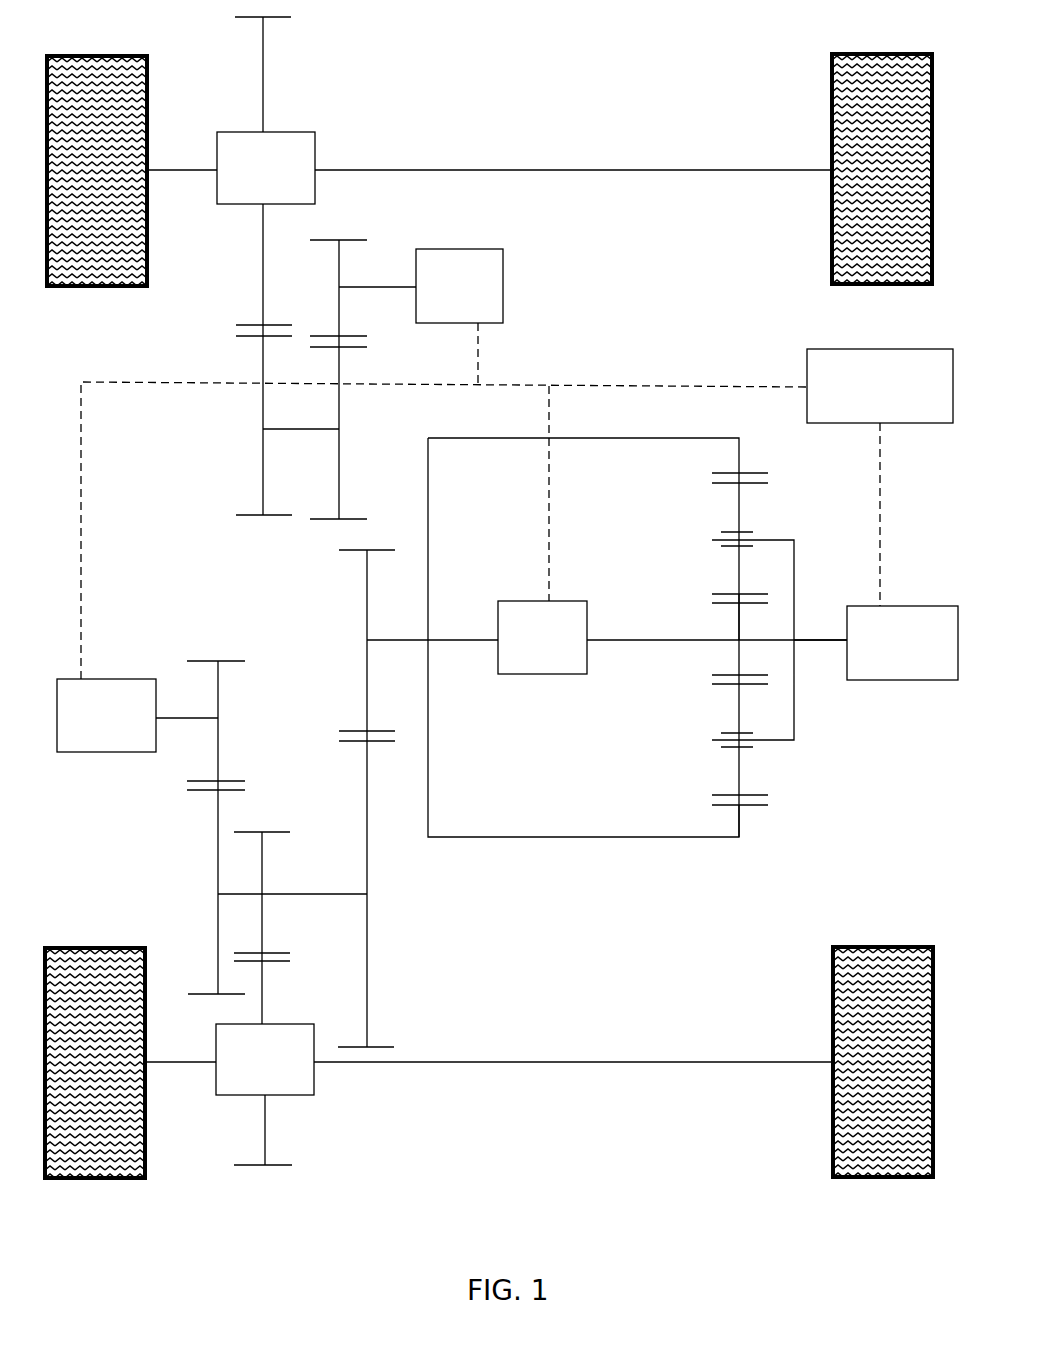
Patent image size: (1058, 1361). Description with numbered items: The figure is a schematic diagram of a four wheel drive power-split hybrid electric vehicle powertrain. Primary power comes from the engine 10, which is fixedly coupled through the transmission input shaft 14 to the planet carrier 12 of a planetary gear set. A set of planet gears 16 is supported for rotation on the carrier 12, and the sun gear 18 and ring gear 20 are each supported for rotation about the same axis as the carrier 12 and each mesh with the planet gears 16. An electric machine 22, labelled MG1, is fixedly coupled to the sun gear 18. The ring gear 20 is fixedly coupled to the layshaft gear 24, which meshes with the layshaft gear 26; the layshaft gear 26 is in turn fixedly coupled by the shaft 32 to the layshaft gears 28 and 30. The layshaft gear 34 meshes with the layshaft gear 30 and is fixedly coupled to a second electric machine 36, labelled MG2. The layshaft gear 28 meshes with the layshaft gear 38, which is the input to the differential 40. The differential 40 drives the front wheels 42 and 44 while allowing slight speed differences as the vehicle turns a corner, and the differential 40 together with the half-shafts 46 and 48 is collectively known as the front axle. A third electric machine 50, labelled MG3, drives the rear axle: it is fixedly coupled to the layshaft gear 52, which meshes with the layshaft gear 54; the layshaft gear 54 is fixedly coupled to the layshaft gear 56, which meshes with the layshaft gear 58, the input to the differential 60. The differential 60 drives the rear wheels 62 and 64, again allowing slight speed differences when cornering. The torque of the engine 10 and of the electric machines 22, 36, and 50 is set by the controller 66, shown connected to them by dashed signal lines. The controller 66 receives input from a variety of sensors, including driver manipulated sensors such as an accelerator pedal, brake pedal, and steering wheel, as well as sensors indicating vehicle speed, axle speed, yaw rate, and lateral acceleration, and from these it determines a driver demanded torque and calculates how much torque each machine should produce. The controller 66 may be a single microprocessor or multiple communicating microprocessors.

The engine 10 is at (903, 606).
The planet carrier 12 is at (794, 707).
The transmission input shaft 14 is at (827, 638).
The planet gears 16 is at (738, 774).
The sun gear 18 is at (737, 628).
The ring gear 20 is at (740, 815).
The electric machine 22 is at (545, 674).
The layshaft gear 24 is at (367, 692).
The layshaft gear 26 is at (367, 997).
The layshaft gear 28 is at (262, 868).
The layshaft gear 30 is at (218, 867).
The shaft 32 is at (305, 894).
The layshaft gear 34 is at (218, 697).
The electric machine 36 is at (93, 679).
The layshaft gear 38 is at (265, 1133).
The differential 40 is at (314, 1080).
The front wheel 42 is at (68, 945).
The front wheel 44 is at (833, 1082).
The half-shaft 46 is at (163, 1062).
The half-shaft 48 is at (652, 1062).
The electric machine 50 is at (503, 290).
The layshaft gear 52 is at (339, 265).
The layshaft gear 54 is at (339, 395).
The layshaft gear 56 is at (263, 463).
The layshaft gear 58 is at (263, 100).
The differential 60 is at (315, 148).
The rear wheel 62 is at (120, 287).
The rear wheel 64 is at (832, 190).
The controller 66 is at (807, 365).